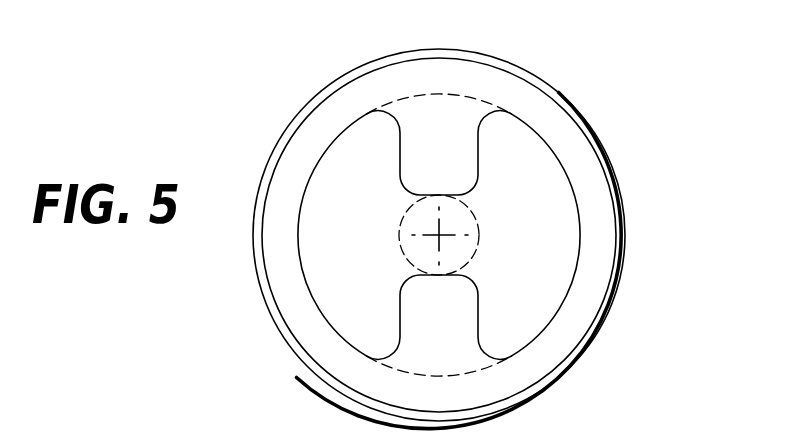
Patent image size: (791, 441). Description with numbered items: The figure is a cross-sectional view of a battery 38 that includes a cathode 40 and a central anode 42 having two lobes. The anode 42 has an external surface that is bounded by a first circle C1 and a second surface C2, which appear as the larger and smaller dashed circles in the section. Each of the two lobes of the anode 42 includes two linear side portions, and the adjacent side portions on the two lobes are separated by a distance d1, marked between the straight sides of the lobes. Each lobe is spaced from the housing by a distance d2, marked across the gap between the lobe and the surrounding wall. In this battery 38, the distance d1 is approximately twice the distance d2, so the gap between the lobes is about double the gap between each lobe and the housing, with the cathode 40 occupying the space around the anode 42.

The battery 38 is at (619, 77).
The cathode 40 is at (302, 148).
The anode 42 is at (548, 213).
The first circle C1 is at (462, 90).
The second surface C2 is at (466, 206).
The distance between adjacent side portions d1 is at (401, 313).
The distance from housing d2 is at (568, 302).